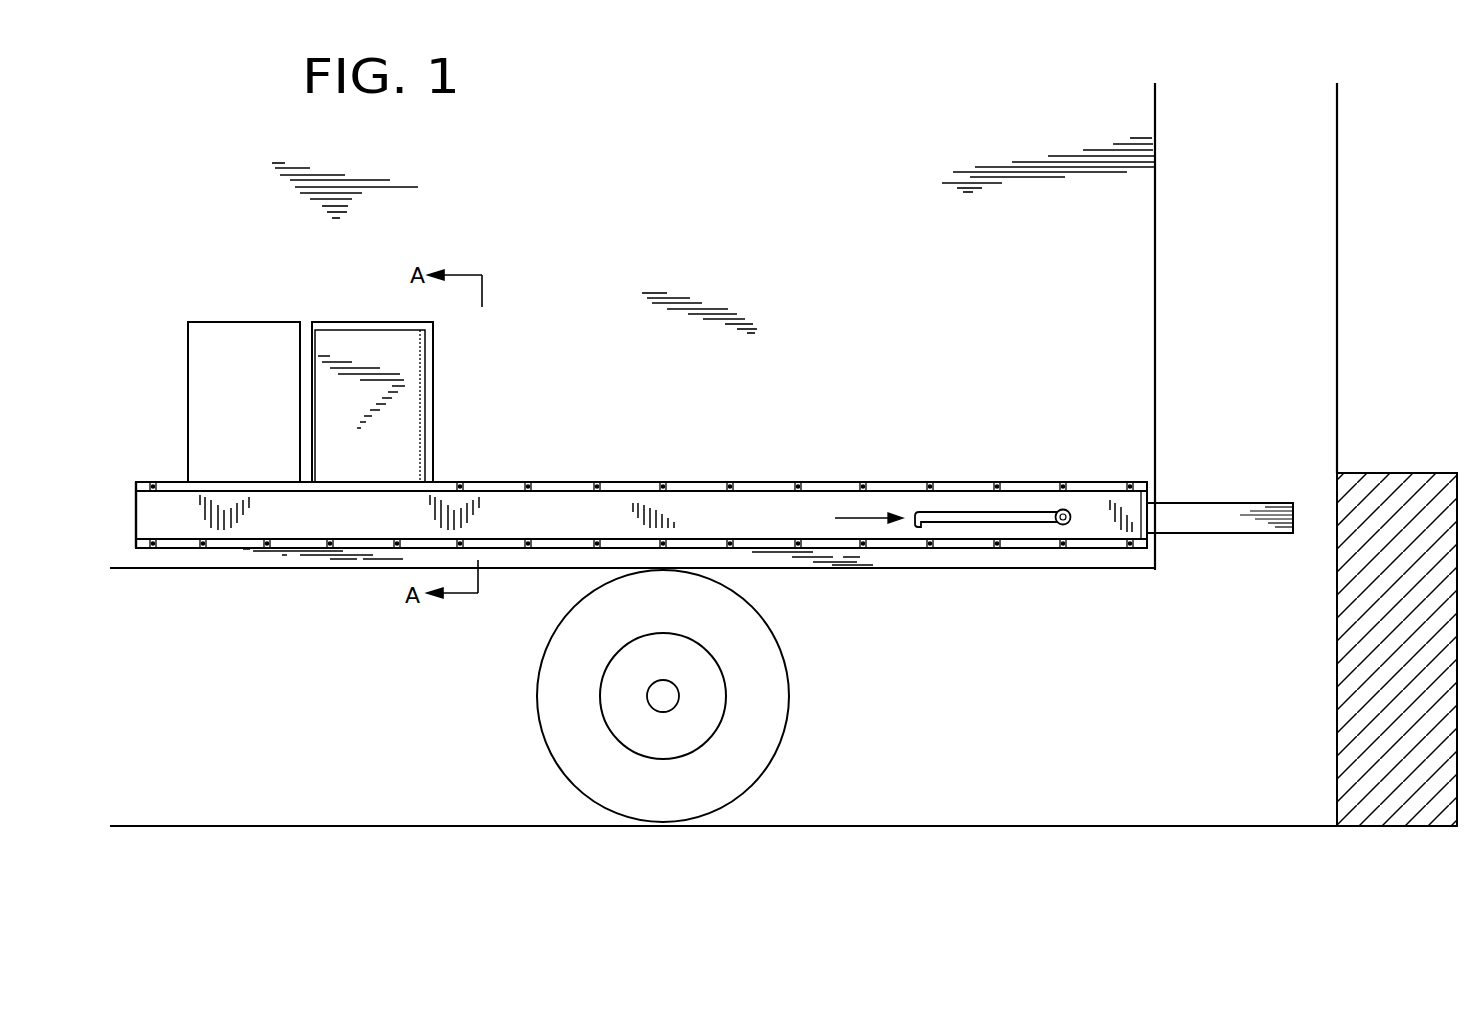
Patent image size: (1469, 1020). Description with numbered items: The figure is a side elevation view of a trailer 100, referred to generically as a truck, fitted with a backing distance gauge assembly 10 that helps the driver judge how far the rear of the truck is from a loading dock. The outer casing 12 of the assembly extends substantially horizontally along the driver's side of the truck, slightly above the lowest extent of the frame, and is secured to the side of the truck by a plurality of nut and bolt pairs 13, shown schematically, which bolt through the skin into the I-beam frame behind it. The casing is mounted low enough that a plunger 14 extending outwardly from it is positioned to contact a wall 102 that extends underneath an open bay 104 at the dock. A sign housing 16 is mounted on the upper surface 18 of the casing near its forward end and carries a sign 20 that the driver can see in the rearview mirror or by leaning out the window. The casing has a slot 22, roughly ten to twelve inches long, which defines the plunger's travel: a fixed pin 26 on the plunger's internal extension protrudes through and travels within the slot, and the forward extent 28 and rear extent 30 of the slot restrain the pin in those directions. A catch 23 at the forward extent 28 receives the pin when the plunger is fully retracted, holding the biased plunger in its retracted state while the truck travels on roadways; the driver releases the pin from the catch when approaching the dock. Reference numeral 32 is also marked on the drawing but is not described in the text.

The backing distance gauge assembly 10 is at (1037, 588).
The outer casing 12 is at (681, 506).
The nut and bolt pairs 13 is at (808, 483).
The plunger 14 is at (1236, 534).
The sign housing 16 is at (248, 322).
The upper surface 18 is at (168, 482).
The sign 20 is at (367, 378).
The slot 22 is at (975, 523).
The catch 23 is at (920, 528).
The fixed pin 26 is at (1062, 509).
The forward extent of the slot 28 is at (852, 523).
The rear extent of the slot 30 is at (1083, 530).
The end plate 32 is at (136, 508).
The trailer 100 is at (757, 226).
The wall 102 is at (1356, 632).
The open bay 104 is at (1411, 377).